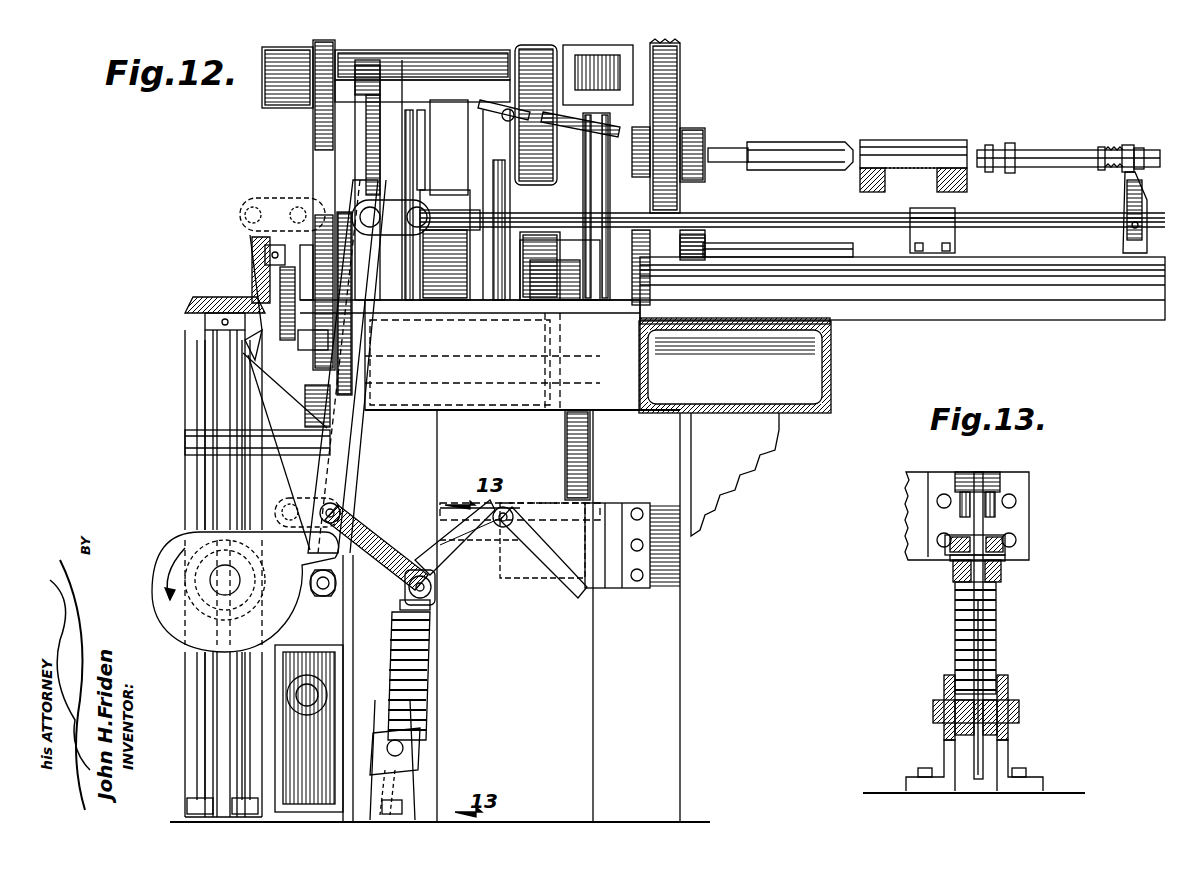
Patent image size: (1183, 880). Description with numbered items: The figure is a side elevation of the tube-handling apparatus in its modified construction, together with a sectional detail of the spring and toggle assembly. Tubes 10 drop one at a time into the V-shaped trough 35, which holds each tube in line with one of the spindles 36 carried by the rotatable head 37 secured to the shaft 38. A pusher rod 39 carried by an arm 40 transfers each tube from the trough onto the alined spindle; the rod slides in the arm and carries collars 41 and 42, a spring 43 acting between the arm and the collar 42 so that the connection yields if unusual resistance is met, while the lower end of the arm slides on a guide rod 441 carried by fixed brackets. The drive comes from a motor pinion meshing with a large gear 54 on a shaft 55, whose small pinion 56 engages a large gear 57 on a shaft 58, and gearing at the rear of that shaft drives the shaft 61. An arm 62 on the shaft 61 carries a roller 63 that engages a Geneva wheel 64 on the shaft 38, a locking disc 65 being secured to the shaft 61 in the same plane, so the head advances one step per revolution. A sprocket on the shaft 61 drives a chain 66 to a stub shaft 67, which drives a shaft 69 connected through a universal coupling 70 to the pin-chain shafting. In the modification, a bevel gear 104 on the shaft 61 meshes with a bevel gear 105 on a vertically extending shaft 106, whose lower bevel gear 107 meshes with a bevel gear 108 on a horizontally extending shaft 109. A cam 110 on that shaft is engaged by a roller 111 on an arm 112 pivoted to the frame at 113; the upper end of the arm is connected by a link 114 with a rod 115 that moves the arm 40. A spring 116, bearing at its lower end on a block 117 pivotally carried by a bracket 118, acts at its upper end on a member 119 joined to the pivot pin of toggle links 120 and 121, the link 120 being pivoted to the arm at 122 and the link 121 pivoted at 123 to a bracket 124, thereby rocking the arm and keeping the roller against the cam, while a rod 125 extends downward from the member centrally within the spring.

In FIG. 12, the shaft 10 is at (787, 142).
In FIG. 12, the V-shaped trough 35 is at (905, 150).
In FIG. 12, the spindles 36 is at (725, 148).
In FIG. 12, the rotatable head 37 is at (684, 60).
In FIG. 12, the shaft 38 is at (458, 70).
In FIG. 12, the pusher rod 39 is at (1055, 152).
In FIG. 12, the arm 40 is at (1125, 190).
In FIG. 12, the collar 41 is at (1140, 147).
In FIG. 12, the collar 42 is at (1100, 145).
In FIG. 12, the spring 43 is at (1115, 147).
In FIG. 12, the large gear 54 is at (310, 405).
In FIG. 12, the shaft 55 is at (450, 503).
In FIG. 12, the small pinion 56 is at (560, 582).
In FIG. 12, the large gear 57 is at (565, 438).
In FIG. 12, the shaft 58 is at (490, 390).
In FIG. 12, the shaft 61 is at (530, 300).
In FIG. 12, the arm 62 is at (297, 318).
In FIG. 12, the roller 63 is at (320, 380).
In FIG. 12, the Geneva wheel 64 is at (330, 70).
In FIG. 12, the locking disc 65 is at (305, 250).
In FIG. 12, the chain 66 is at (500, 245).
In FIG. 12, the stub shaft 67 is at (520, 200).
In FIG. 12, the shaft 69 is at (392, 110).
In FIG. 12, the universal coupling 70 is at (520, 120).
In FIG. 12, the bevel gear 104 is at (250, 252).
In FIG. 12, the bevel gear 105 is at (220, 297).
In FIG. 12, the vertically extending shaft 106 is at (185, 365).
In FIG. 12, the bevel gear 107 is at (150, 530).
In FIG. 12, the bevel gear 108 is at (150, 556).
In FIG. 12, the horizontally extending shaft 109 is at (220, 585).
In FIG. 12, the cam 110 is at (158, 593).
In FIG. 12, the roller 111 is at (312, 575).
In FIG. 12, the arm 112 is at (365, 375).
In FIG. 12, the pivot 113 is at (310, 715).
In FIG. 12, the link 114 is at (380, 205).
In FIG. 12, the rod 115 is at (800, 208).
In FIG. 12, the spring 116 is at (432, 672).
In FIG. 13, the spring 116 is at (1000, 636).
In FIG. 12, the block 117 is at (420, 745).
In FIG. 13, the block 117 is at (944, 728).
In FIG. 12, the bracket 118 is at (410, 785).
In FIG. 13, the bracket 118 is at (995, 780).
In FIG. 12, the member 119 is at (432, 608).
In FIG. 13, the member 119 is at (950, 565).
In FIG. 12, the toggle link 120 is at (385, 540).
In FIG. 13, the toggle link 120 is at (1003, 570).
In FIG. 12, the toggle link 121 is at (438, 575).
In FIG. 13, the toggle link 121 is at (985, 515).
In FIG. 12, the pivot 122 is at (315, 505).
In FIG. 12, the pivot 123 is at (510, 512).
In FIG. 13, the pivot 123 is at (1005, 487).
In FIG. 12, the bracket 124 is at (560, 545).
In FIG. 13, the bracket 124 is at (910, 514).
In FIG. 12, the rod 125 is at (410, 770).
In FIG. 13, the rod 125 is at (984, 757).
In FIG. 12, the guide rod 441 is at (1065, 250).